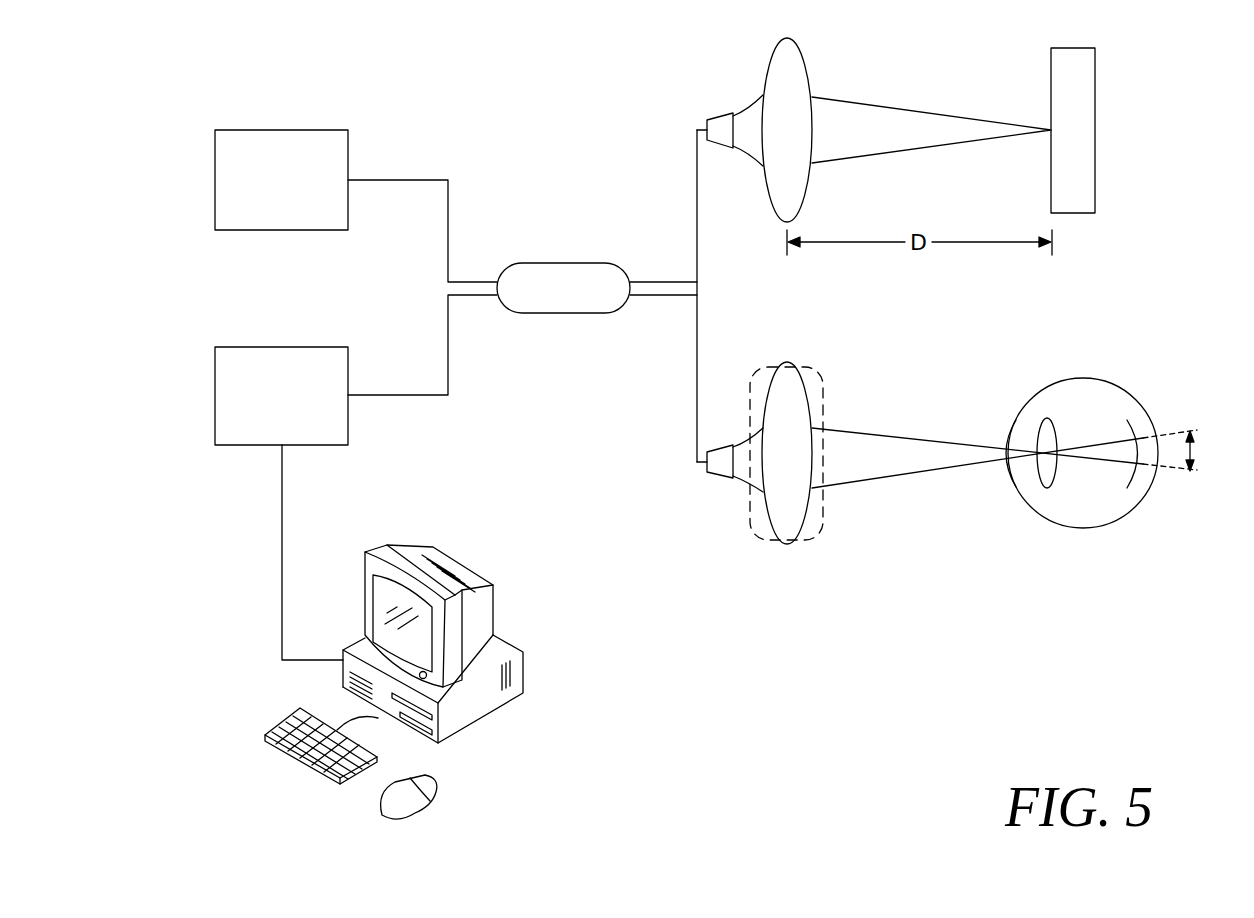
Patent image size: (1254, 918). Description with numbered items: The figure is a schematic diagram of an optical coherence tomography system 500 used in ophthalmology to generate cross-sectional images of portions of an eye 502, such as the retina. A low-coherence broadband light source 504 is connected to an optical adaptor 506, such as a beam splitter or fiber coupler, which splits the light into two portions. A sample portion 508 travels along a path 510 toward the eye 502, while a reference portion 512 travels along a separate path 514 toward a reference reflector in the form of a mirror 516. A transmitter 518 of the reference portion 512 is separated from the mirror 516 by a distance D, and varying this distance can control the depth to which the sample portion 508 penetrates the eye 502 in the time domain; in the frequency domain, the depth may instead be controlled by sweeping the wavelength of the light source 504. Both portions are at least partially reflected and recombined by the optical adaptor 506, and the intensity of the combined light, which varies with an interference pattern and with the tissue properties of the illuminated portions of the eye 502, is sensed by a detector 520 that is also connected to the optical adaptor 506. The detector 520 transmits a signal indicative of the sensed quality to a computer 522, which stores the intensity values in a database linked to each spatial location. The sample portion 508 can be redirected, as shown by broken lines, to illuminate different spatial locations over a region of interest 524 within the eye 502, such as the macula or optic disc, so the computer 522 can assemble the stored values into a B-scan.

The optical coherence tomography system 500 is at (787, 676).
The eye 502 is at (1083, 542).
The light source 504 is at (298, 192).
The optical adaptor 506 is at (580, 301).
The sample portion 508 is at (908, 478).
The path 510 is at (694, 388).
The reference portion 512 is at (914, 108).
The path 514 is at (694, 181).
The mirror 516 is at (1095, 102).
The transmitter 518 is at (763, 80).
The detector 520 is at (298, 407).
The computer 522 is at (492, 612).
The region of interest 524 is at (1215, 451).